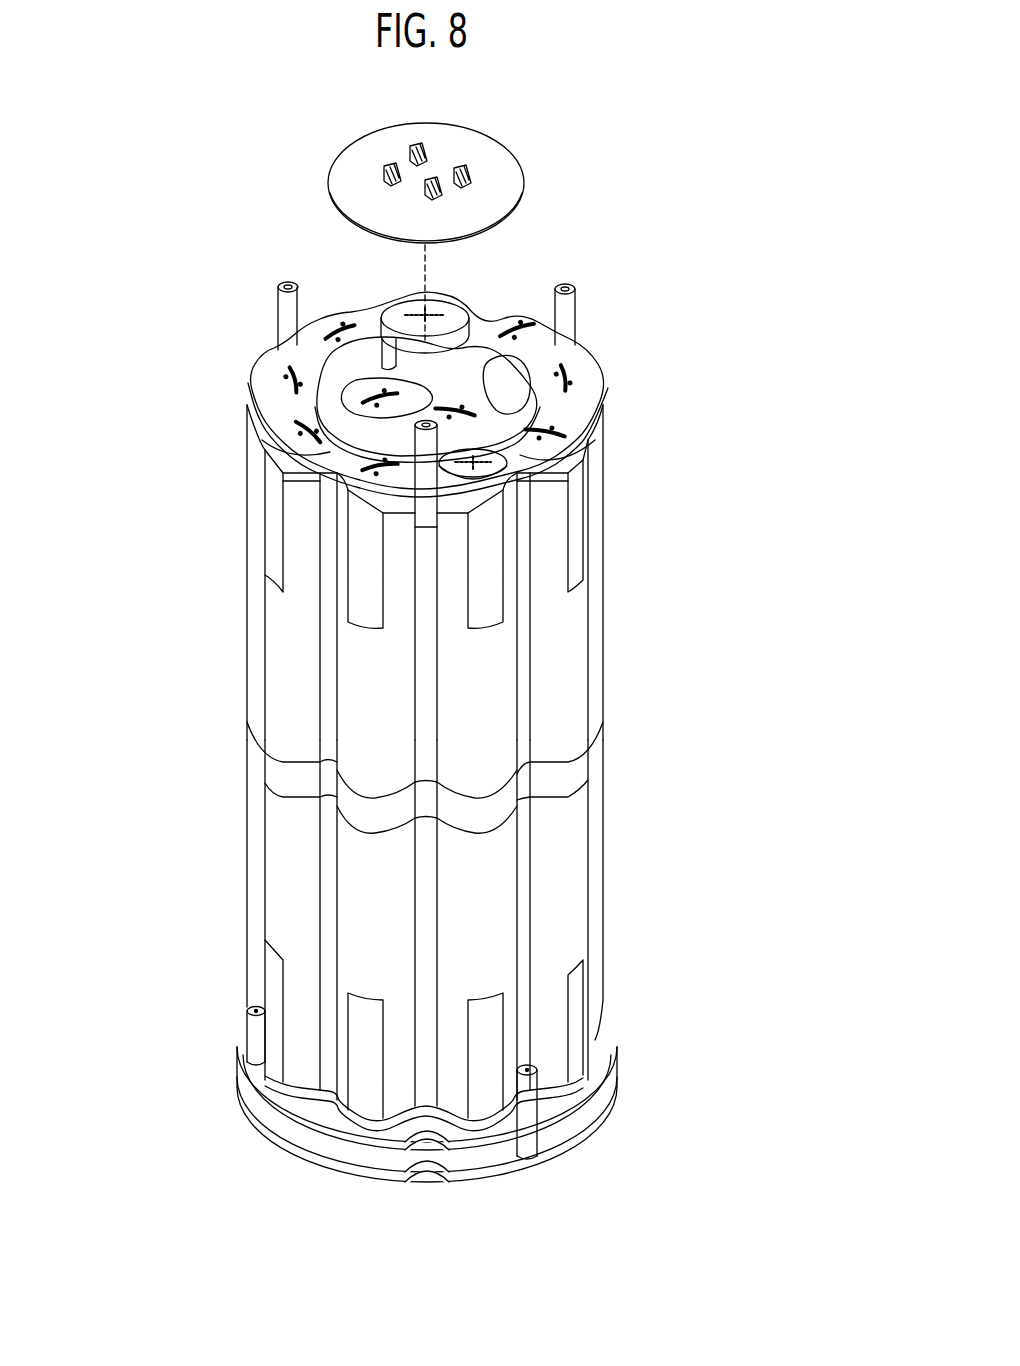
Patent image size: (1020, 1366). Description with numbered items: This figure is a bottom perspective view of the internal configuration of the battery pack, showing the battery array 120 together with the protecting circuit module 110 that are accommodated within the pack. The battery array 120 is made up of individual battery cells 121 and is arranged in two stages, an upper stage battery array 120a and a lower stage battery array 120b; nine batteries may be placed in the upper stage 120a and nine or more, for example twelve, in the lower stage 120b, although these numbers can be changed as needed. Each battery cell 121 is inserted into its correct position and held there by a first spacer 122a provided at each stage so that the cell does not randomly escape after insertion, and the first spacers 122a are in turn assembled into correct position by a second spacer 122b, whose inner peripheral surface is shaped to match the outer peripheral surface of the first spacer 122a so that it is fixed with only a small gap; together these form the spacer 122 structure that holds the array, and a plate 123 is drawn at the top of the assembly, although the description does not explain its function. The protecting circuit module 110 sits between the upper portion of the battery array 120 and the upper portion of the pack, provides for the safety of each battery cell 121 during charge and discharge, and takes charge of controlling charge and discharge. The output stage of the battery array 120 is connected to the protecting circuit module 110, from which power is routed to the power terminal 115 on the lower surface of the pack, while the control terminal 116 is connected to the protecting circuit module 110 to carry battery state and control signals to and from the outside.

The protecting circuit module 110 is at (605, 1068).
The power terminal 115 is at (311, 171).
The control terminal 116 is at (187, 169).
The battery array 120 is at (490, 769).
The upper stage battery array 120a is at (471, 926).
The lower stage battery array 120b is at (618, 408).
The battery cell 121 is at (278, 995).
The spacer 122 is at (336, 761).
The first spacer 122a is at (361, 929).
The second spacer 122b is at (262, 650).
The top plate 123 is at (540, 350).